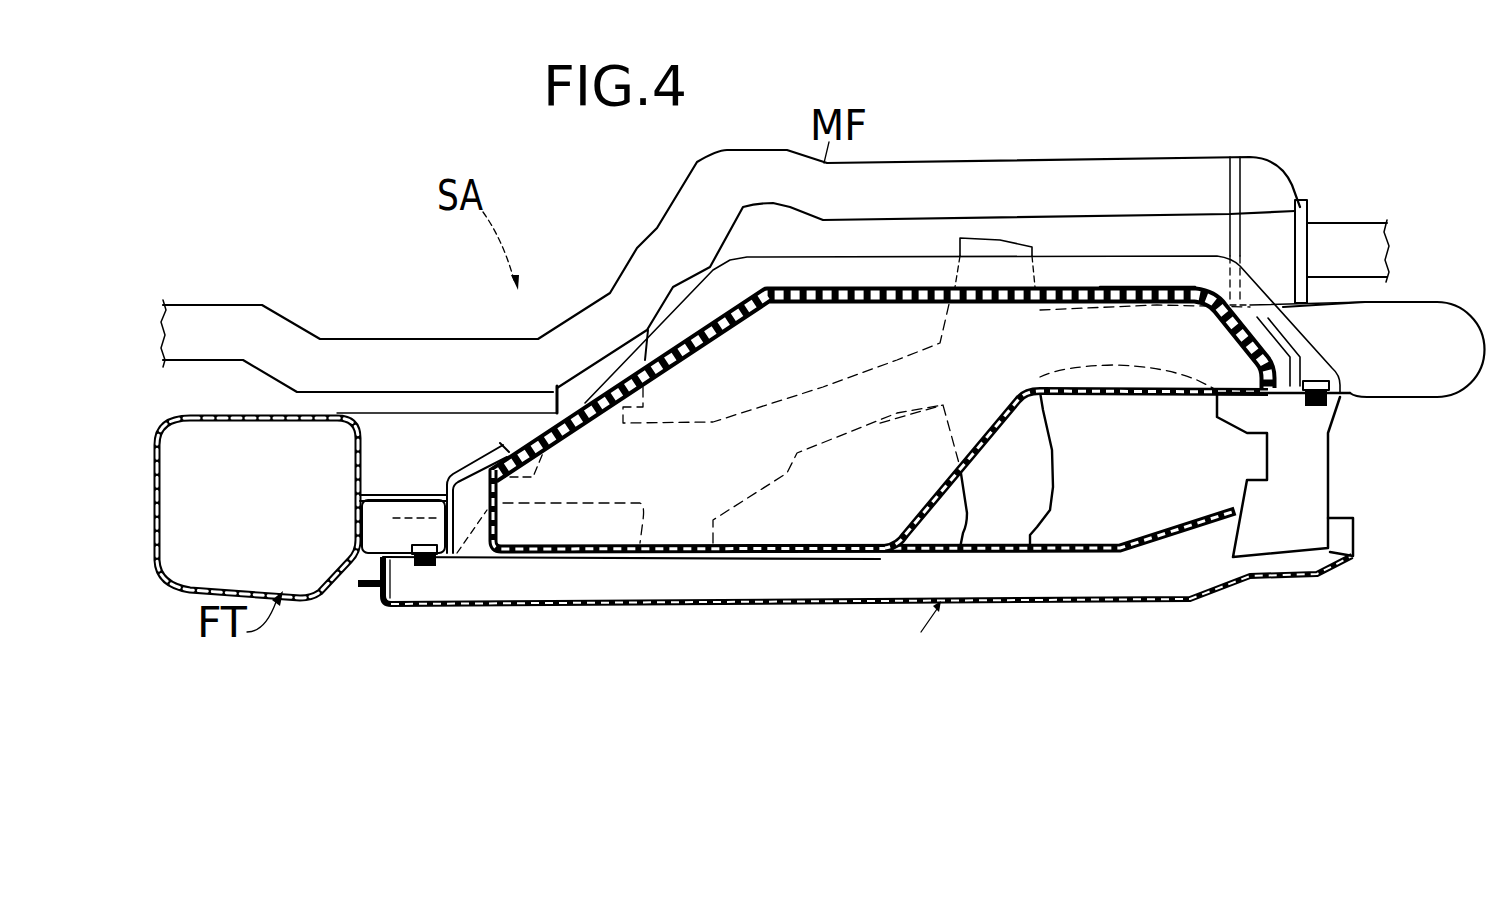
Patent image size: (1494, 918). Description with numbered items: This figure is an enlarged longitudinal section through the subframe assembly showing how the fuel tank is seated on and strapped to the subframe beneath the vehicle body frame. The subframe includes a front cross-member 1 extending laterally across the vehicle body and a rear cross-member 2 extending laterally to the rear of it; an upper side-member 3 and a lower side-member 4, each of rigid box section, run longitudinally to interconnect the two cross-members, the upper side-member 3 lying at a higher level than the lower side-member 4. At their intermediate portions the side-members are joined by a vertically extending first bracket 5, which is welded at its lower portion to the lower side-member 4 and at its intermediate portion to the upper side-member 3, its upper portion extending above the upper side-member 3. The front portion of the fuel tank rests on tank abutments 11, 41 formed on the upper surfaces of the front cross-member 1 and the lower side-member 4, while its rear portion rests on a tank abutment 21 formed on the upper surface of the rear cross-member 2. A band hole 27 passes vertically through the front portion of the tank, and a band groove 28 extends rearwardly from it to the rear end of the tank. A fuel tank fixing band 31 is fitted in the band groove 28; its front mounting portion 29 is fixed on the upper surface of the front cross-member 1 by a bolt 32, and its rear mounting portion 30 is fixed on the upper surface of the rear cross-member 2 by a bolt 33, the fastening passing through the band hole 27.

The front cross-member 1 is at (364, 609).
The tank abutment 11 is at (398, 553).
The rear cross-member 2 is at (1344, 471).
The tank abutment 21 is at (1238, 370).
The upper side-member 3 is at (823, 390).
The lower side-member 4 is at (686, 612).
The tank abutment 41 is at (688, 543).
The first bracket 5 is at (1045, 478).
The band hole 27 is at (407, 492).
The band groove 28 is at (887, 270).
The front mounting portion 29 is at (452, 474).
The rear mounting portion 30 is at (1315, 347).
The fuel tank fixing band 31 is at (1112, 287).
The bolt 32 is at (440, 570).
The bolt 33 is at (1317, 407).